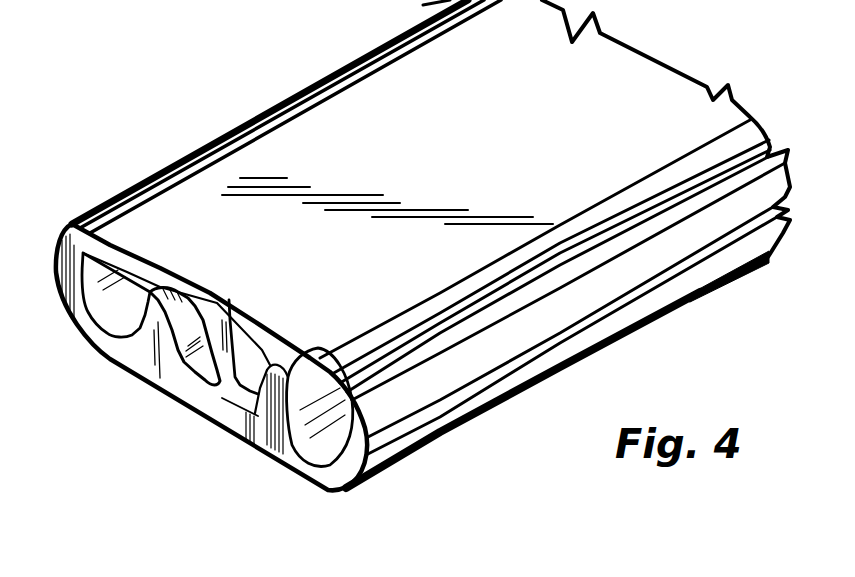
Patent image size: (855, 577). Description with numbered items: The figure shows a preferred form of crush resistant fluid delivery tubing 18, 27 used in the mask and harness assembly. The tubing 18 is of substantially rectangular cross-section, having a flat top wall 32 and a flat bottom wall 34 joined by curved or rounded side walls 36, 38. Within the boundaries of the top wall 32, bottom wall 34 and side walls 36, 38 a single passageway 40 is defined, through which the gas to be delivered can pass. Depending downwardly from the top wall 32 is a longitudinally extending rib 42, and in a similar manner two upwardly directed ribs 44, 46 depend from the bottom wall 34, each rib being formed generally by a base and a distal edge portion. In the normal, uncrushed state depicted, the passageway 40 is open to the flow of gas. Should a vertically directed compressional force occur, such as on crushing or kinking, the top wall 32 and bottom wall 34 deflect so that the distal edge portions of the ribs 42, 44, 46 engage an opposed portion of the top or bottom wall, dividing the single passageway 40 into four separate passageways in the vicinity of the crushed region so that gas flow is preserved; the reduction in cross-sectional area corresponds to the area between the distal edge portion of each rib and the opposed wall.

The fluid delivery tubing 18 is at (283, 105).
The fluid delivery tubing 27 is at (431, 244).
The top wall 32 is at (153, 263).
The bottom wall 34 is at (202, 400).
The side wall 36 is at (62, 300).
The side wall 38 is at (358, 434).
The passageway 40 is at (120, 300).
The rib 42 is at (215, 360).
The rib 44 is at (158, 323).
The rib 46 is at (320, 458).